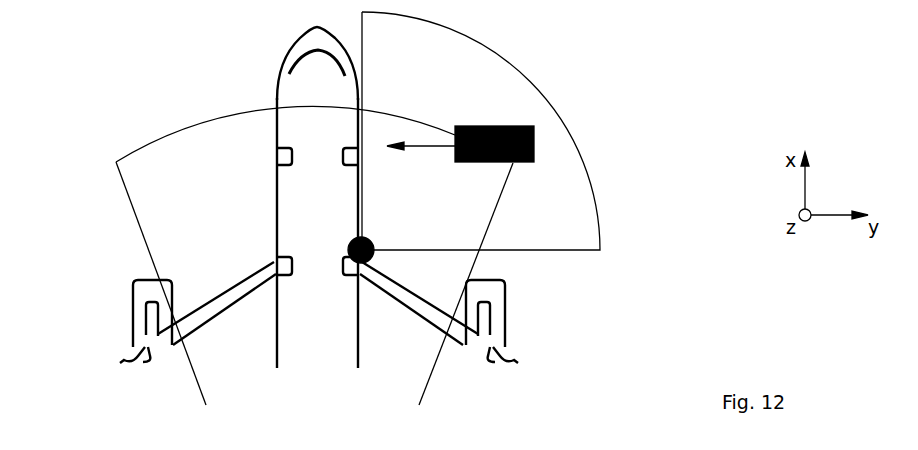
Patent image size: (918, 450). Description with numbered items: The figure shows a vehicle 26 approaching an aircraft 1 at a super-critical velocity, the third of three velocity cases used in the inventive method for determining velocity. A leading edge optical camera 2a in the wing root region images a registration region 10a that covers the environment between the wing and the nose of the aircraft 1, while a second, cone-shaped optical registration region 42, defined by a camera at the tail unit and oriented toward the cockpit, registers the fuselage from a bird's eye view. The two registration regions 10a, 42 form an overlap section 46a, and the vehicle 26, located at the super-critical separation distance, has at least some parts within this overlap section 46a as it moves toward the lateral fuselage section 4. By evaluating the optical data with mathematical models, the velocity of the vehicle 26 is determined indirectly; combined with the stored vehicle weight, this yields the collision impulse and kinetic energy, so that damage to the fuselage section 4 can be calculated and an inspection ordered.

The aircraft 1 is at (236, 44).
The registration region 10a is at (468, 55).
The vehicle 26 is at (534, 141).
The overlap section 46a is at (462, 215).
The lateral fuselage section 4 is at (363, 212).
The optical camera 2a is at (374, 252).
The optical registration region 42 is at (180, 178).